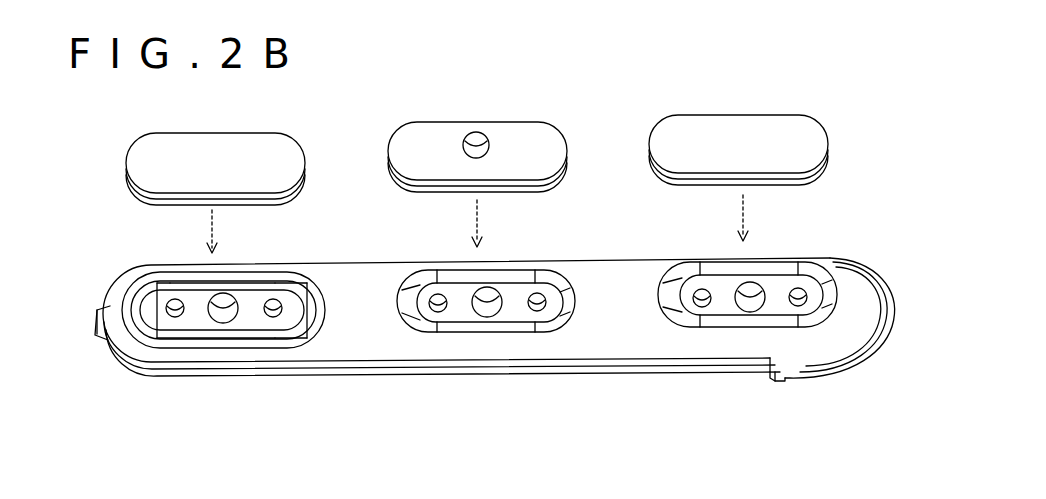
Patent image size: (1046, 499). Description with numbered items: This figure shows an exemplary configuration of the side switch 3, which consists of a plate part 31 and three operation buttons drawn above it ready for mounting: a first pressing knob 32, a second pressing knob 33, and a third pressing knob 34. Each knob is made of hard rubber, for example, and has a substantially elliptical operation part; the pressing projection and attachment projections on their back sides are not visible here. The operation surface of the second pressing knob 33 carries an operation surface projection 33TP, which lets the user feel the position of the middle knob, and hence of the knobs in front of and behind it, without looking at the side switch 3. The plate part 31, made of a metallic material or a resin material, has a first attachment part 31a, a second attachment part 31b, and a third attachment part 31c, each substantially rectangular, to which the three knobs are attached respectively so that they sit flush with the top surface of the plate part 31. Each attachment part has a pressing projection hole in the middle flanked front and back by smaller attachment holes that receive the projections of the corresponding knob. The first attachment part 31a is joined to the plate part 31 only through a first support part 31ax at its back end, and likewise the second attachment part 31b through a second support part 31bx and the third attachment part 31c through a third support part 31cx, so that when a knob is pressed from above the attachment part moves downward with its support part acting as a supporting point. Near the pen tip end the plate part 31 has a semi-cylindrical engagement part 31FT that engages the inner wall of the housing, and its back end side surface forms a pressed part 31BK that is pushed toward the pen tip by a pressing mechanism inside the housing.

The side switch 3 is at (611, 104).
The plate part 31 is at (355, 356).
The first attachment part 31a is at (246, 320).
The first support part 31ax is at (306, 300).
The second attachment part 31b is at (510, 312).
The second support part 31bx is at (566, 292).
The third attachment part 31c is at (720, 305).
The third support part 31cx is at (831, 284).
The engagement part 31FT is at (106, 342).
The pressed part 31BK is at (887, 343).
The first pressing knob 32 is at (212, 133).
The second pressing knob 33 is at (530, 130).
The operation surface projection 33TP is at (474, 138).
The third pressing knob 34 is at (748, 115).